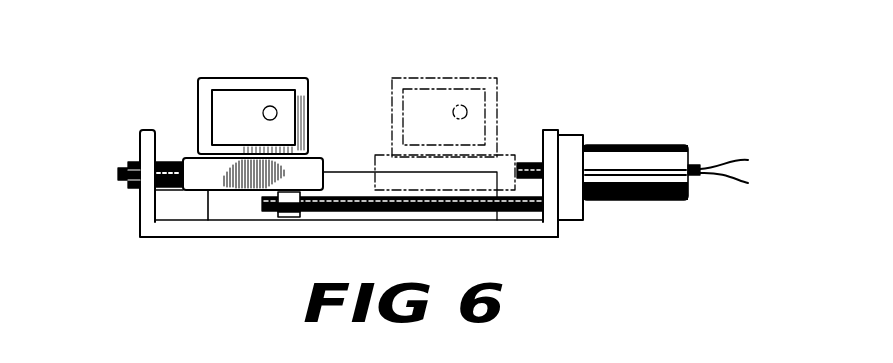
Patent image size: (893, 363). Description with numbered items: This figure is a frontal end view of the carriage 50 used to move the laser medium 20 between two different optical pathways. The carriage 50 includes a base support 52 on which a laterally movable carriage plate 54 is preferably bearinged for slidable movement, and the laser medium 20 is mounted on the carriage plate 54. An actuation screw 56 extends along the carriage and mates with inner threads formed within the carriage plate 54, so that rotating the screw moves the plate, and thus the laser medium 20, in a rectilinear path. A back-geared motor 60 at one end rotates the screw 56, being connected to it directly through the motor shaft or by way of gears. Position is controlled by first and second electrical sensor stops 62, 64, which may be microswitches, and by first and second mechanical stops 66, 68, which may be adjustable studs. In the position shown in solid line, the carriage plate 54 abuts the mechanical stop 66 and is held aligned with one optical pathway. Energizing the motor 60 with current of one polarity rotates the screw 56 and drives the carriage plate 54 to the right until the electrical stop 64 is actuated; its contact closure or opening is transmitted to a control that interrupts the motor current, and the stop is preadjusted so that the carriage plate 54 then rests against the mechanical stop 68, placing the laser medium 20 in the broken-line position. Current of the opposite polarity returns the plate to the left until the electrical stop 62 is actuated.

The laser medium 20 is at (248, 82).
The carriage 50 is at (182, 60).
The base support 52 is at (242, 237).
The carriage plate 54 is at (320, 158).
The actuation screw 56 is at (358, 197).
The back-geared motor 60 is at (623, 145).
The first electrical sensor stop 62 is at (165, 160).
The second electrical sensor stop 64 is at (533, 160).
The first mechanical stop 66 is at (177, 162).
The second mechanical stop 68 is at (518, 162).